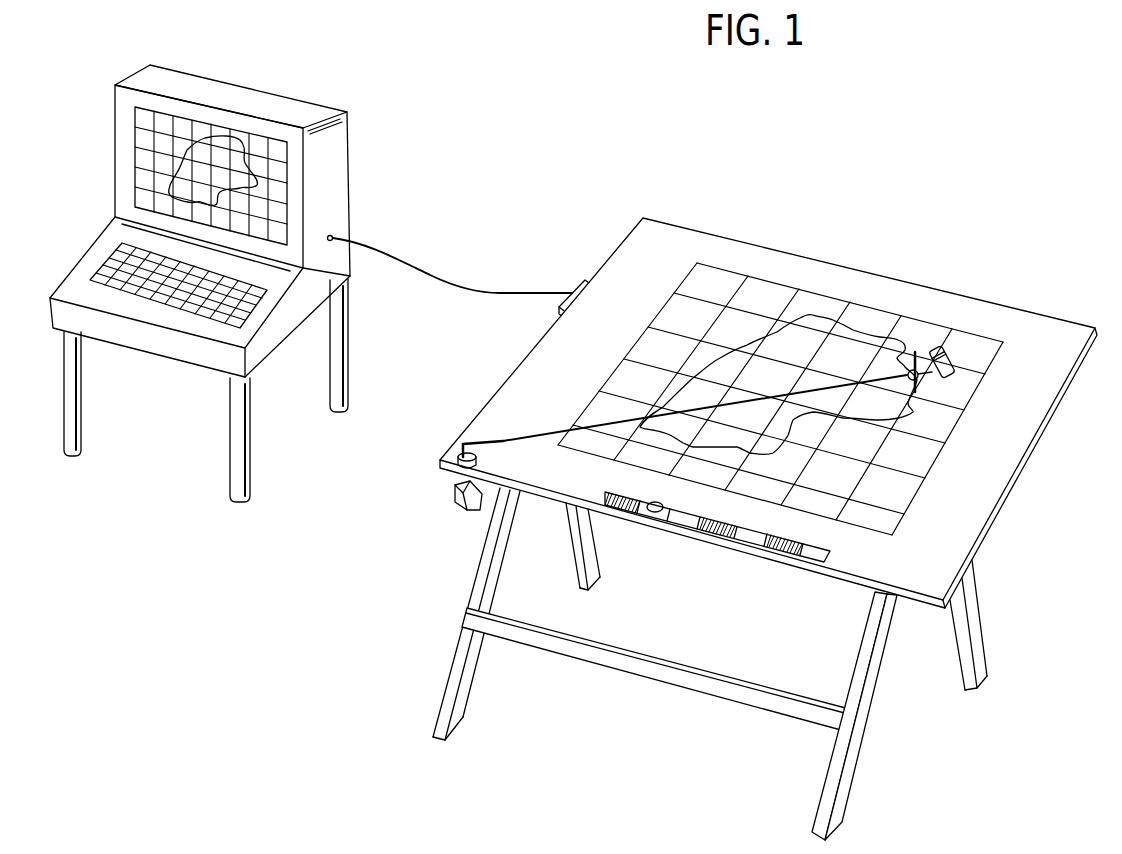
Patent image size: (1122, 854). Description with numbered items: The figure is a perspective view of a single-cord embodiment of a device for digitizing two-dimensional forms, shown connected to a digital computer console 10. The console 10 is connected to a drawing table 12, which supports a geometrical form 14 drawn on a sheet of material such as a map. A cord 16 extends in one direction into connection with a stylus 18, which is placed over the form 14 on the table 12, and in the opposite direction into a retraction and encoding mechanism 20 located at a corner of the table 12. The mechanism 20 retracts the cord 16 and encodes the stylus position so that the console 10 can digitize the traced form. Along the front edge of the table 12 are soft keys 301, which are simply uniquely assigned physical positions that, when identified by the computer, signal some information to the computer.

The digital computer console 10 is at (345, 178).
The drawing table 12 is at (652, 228).
The geometrical form 14 is at (750, 343).
The cord 16 is at (830, 387).
The stylus 18 is at (915, 388).
The retraction and encoding mechanism 20 is at (455, 508).
The soft keys 301 is at (745, 532).